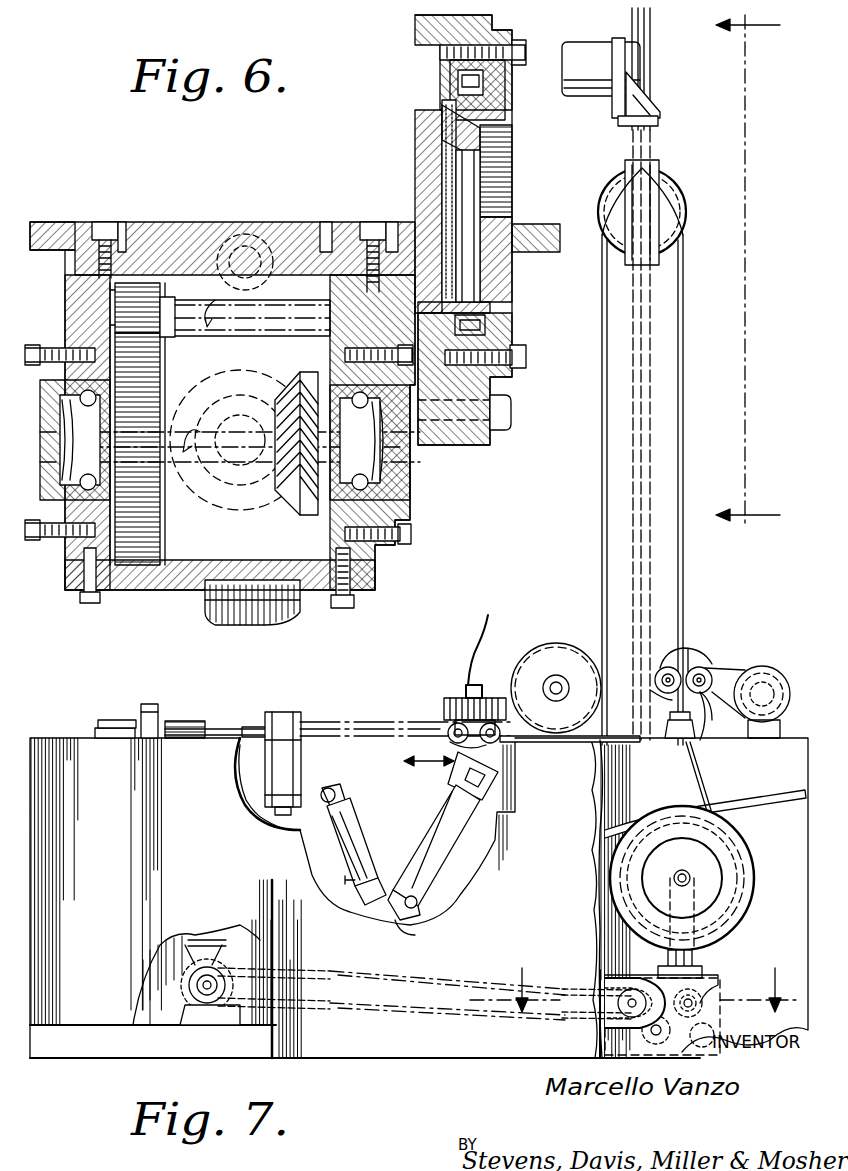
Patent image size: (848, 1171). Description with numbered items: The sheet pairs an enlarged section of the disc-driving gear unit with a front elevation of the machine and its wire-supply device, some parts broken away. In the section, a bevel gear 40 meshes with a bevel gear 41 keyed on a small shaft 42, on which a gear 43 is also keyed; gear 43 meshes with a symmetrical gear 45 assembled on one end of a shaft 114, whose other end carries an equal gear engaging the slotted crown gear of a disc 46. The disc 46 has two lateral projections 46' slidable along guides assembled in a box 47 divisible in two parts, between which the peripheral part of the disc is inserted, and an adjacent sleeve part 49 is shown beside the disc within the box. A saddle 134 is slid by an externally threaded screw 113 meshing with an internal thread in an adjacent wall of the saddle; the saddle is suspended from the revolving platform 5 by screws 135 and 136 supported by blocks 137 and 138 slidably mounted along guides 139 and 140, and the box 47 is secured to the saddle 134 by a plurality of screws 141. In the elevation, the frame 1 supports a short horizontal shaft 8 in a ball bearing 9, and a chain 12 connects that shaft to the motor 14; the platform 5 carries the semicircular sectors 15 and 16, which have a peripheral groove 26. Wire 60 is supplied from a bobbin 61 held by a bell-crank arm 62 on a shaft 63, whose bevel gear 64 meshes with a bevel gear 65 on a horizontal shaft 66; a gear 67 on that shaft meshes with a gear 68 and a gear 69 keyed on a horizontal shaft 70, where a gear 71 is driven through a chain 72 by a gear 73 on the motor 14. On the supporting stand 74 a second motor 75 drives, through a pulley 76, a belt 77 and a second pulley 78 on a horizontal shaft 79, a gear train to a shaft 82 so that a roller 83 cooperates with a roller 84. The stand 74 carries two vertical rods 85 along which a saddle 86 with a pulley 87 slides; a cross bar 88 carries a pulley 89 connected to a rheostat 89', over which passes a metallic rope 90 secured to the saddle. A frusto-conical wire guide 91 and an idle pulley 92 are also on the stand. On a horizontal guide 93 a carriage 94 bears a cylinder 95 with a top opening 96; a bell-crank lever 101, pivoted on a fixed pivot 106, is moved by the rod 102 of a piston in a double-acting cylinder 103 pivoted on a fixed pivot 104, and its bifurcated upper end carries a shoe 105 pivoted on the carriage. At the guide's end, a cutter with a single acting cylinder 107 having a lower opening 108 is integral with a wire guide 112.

In FIG. 7, the frame 1 is at (262, 915).
In FIG. 6, the revolving platform 5 is at (258, 244).
In FIG. 6, the horizontal shaft 8 is at (748, 279).
In FIG. 7, the ball bearing 9 is at (635, 990).
In FIG. 7, the chain 12 is at (175, 960).
In FIG. 7, the motor 14 is at (216, 962).
In FIG. 7, the semicircular sector 15 is at (116, 722).
In FIG. 7, the semicircular sector 16 is at (181, 721).
In FIG. 7, the peripheral groove 26 is at (97, 730).
In FIG. 6, the bevel gear 40 is at (222, 505).
In FIG. 6, the bevel gear 41 is at (312, 517).
In FIG. 6, the small shaft 42 is at (245, 468).
In FIG. 6, the gear 43 is at (135, 565).
In FIG. 6, the gear 45 is at (140, 290).
In FIG. 6, the disc 46 is at (413, 201).
In FIG. 6, the lateral projection 46' is at (460, 161).
In FIG. 6, the box 47 is at (416, 57).
In FIG. 7, the box 47 is at (150, 704).
In FIG. 6, the sleeve 49 is at (470, 214).
In FIG. 6, the wire 60 is at (686, 368).
In FIG. 7, the wire 60 is at (720, 818).
In FIG. 7, the bobbin 61 is at (742, 870).
In FIG. 7, the bell-crank arm 62 is at (700, 962).
In FIG. 7, the shaft 63 is at (718, 988).
In FIG. 7, the bevel gear 64 is at (714, 1000).
In FIG. 7, the bevel gear 65 is at (705, 1015).
In FIG. 7, the horizontal shaft 66 is at (702, 1035).
In FIG. 7, the gear 67 is at (665, 982).
In FIG. 7, the gear 68 is at (656, 1044).
In FIG. 7, the gear 69 is at (604, 965).
In FIG. 7, the horizontal shaft 70 is at (600, 1020).
In FIG. 7, the gear 71 is at (580, 991).
In FIG. 7, the chain 72 is at (305, 1060).
In FIG. 7, the gear 73 is at (210, 996).
In FIG. 7, the supporting stand 74 is at (748, 787).
In FIG. 7, the second motor 75 is at (776, 684).
In FIG. 7, the pulley 76 is at (748, 680).
In FIG. 7, the belt 77 is at (725, 668).
In FIG. 7, the second pulley 78 is at (695, 650).
In FIG. 7, the horizontal shaft 79 is at (700, 672).
In FIG. 7, the shaft 82 is at (665, 672).
In FIG. 7, the roller 83 is at (666, 690).
In FIG. 7, the roller 84 is at (702, 745).
In FIG. 6, the vertical rod 85 is at (636, 316).
In FIG. 6, the saddle 86 is at (660, 164).
In FIG. 6, the pulley 87 is at (670, 204).
In FIG. 6, the cross bar 88 is at (660, 124).
In FIG. 6, the pulley 89 is at (651, 78).
In FIG. 6, the rheostat 89' is at (596, 57).
In FIG. 6, the metallic rope 90 is at (636, 28).
In FIG. 7, the wire guide 91 is at (675, 745).
In FIG. 7, the idle pulley 92 is at (554, 660).
In FIG. 7, the horizontal guide 93 is at (380, 723).
In FIG. 7, the carriage 94 is at (448, 736).
In FIG. 7, the cylinder 95 is at (458, 698).
In FIG. 7, the top opening 96 is at (482, 676).
In FIG. 7, the bell-crank lever 101 is at (446, 827).
In FIG. 7, the piston rod 102 is at (386, 895).
In FIG. 7, the double-acting cylinder 103 is at (356, 830).
In FIG. 7, the fixed pivot 104 is at (332, 792).
In FIG. 7, the shoe 105 is at (466, 770).
In FIG. 7, the fixed pivot 106 is at (425, 920).
In FIG. 7, the single acting cylinder 107 is at (284, 716).
In FIG. 7, the lower opening 108 is at (242, 802).
In FIG. 7, the wire guide 112 is at (248, 728).
In FIG. 6, the screw 113 is at (260, 245).
In FIG. 6, the shaft 114 is at (262, 332).
In FIG. 6, the saddle 134 is at (308, 598).
In FIG. 6, the screw 135 is at (104, 222).
In FIG. 6, the screw 136 is at (374, 226).
In FIG. 6, the block 137 is at (124, 235).
In FIG. 6, the block 138 is at (396, 235).
In FIG. 6, the guide 139 is at (62, 222).
In FIG. 6, the guide 140 is at (328, 238).
In FIG. 6, the screw 141 is at (500, 432).